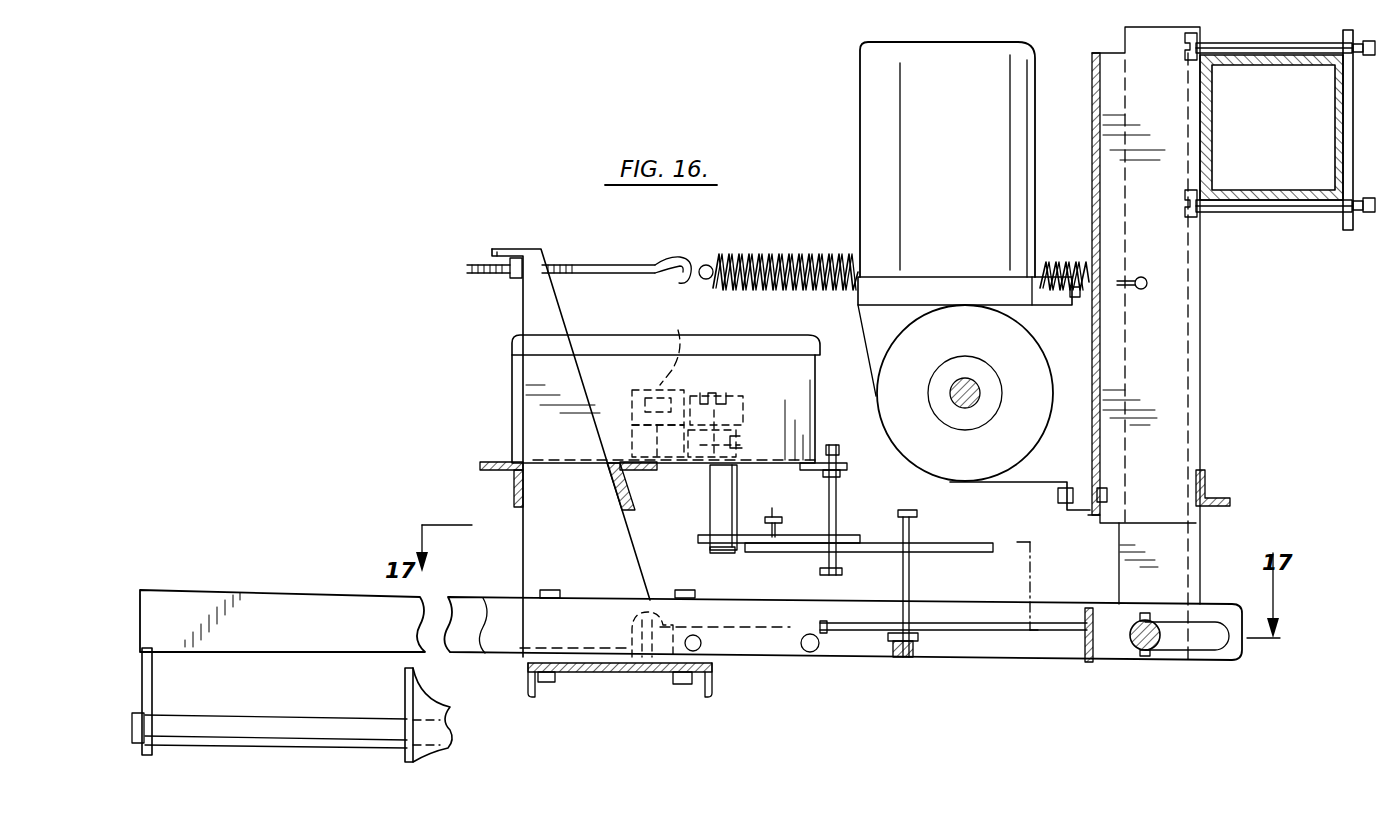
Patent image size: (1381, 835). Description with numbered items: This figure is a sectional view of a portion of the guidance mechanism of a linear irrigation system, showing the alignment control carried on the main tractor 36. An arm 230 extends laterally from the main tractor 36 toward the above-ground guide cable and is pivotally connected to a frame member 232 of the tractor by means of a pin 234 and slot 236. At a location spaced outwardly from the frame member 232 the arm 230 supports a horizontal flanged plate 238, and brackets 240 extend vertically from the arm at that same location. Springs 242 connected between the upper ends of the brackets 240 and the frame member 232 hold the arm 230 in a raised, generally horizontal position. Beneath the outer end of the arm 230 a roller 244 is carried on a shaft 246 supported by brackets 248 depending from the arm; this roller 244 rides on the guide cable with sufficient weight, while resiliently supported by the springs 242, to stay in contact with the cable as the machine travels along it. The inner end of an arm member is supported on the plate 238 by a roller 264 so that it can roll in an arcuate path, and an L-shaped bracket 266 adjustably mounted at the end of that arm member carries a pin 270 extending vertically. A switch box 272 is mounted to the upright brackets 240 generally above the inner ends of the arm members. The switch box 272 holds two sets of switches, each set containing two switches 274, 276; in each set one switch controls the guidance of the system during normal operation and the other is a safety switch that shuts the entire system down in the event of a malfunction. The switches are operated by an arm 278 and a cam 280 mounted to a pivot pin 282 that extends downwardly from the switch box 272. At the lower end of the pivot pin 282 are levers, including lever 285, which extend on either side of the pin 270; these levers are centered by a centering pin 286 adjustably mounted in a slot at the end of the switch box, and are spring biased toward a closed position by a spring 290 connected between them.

The main tractor 36 is at (1267, 32).
The arm 230 is at (412, 605).
The frame member 232 is at (1183, 548).
The pin 234 is at (1160, 650).
The slot 236 is at (1207, 645).
The horizontal flanged plate 238 is at (593, 672).
The brackets 240 is at (533, 308).
The springs 242 is at (765, 253).
The roller 244 is at (443, 733).
The shaft 246 is at (303, 723).
The brackets 248 is at (152, 685).
The roller 264 is at (634, 612).
The L-shaped bracket 266 is at (913, 657).
The pin 270 is at (912, 528).
The switch box 272 is at (805, 393).
The switch 274 is at (632, 433).
The switch 276 is at (677, 347).
The arm 278 is at (697, 392).
The cam 280 is at (743, 437).
The pivot pin 282 is at (710, 503).
The lever 285 is at (952, 553).
The centering pin 286 is at (838, 503).
The spring 290 is at (793, 502).